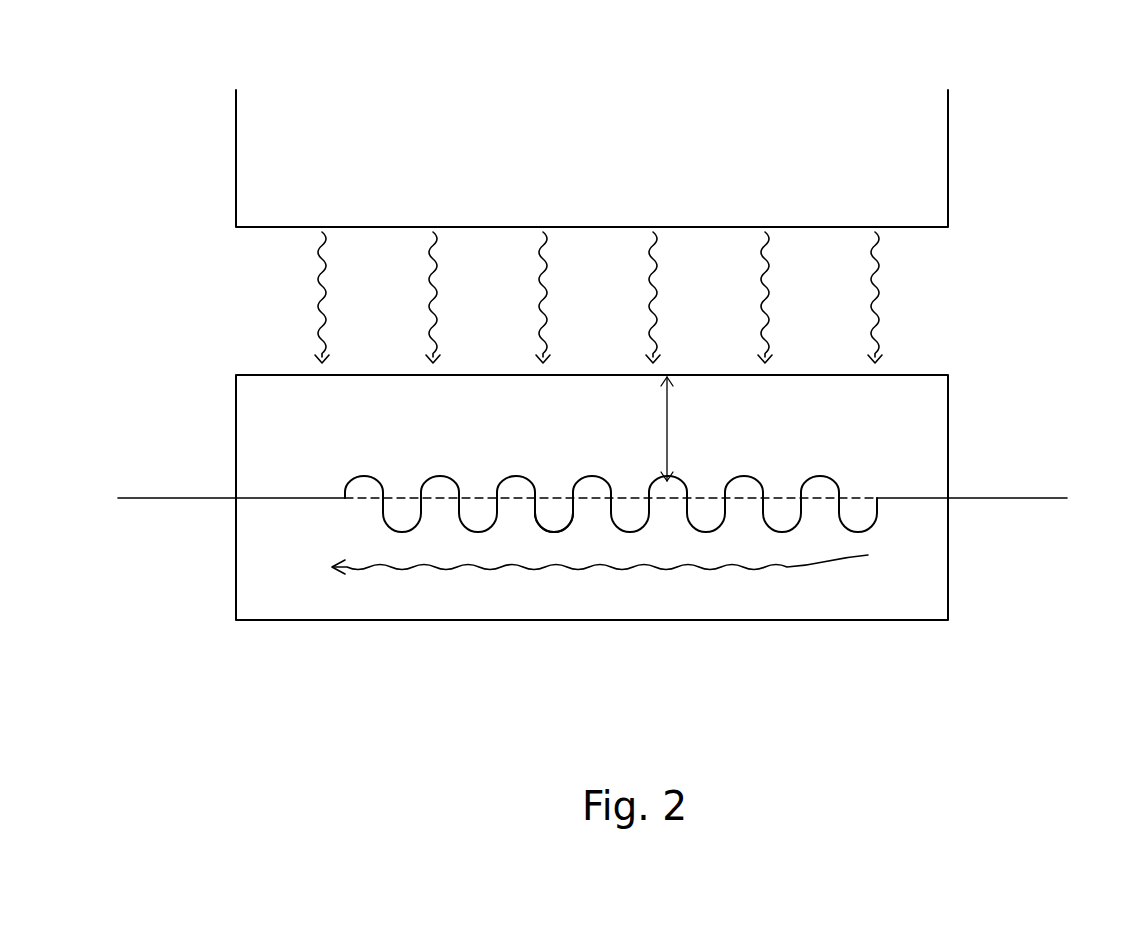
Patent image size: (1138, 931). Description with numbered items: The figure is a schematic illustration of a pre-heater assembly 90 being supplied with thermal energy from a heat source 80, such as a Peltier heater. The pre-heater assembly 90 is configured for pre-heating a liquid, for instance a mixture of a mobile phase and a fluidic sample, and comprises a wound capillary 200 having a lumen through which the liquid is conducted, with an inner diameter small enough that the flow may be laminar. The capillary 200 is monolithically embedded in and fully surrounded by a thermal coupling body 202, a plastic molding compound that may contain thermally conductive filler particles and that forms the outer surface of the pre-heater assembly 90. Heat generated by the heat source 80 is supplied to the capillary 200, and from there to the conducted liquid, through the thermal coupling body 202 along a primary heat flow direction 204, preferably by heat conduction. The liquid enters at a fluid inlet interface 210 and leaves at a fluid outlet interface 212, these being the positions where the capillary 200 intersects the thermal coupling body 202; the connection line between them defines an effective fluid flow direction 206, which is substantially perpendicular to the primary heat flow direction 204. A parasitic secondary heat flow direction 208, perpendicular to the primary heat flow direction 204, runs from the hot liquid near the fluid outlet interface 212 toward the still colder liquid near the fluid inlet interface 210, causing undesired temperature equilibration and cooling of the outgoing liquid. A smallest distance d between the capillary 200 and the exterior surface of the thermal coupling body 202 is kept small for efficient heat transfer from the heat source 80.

The heat source 80 is at (660, 158).
The pre-heater assembly 90 is at (616, 509).
The capillary 200 is at (700, 430).
The thermal coupling body 202 is at (631, 445).
The primary heat flow direction 204 is at (598, 302).
The effective fluid flow direction 206 is at (583, 456).
The secondary heat flow direction 208 is at (600, 651).
The fluid inlet interface 210 is at (225, 539).
The fluid outlet interface 212 is at (1002, 436).